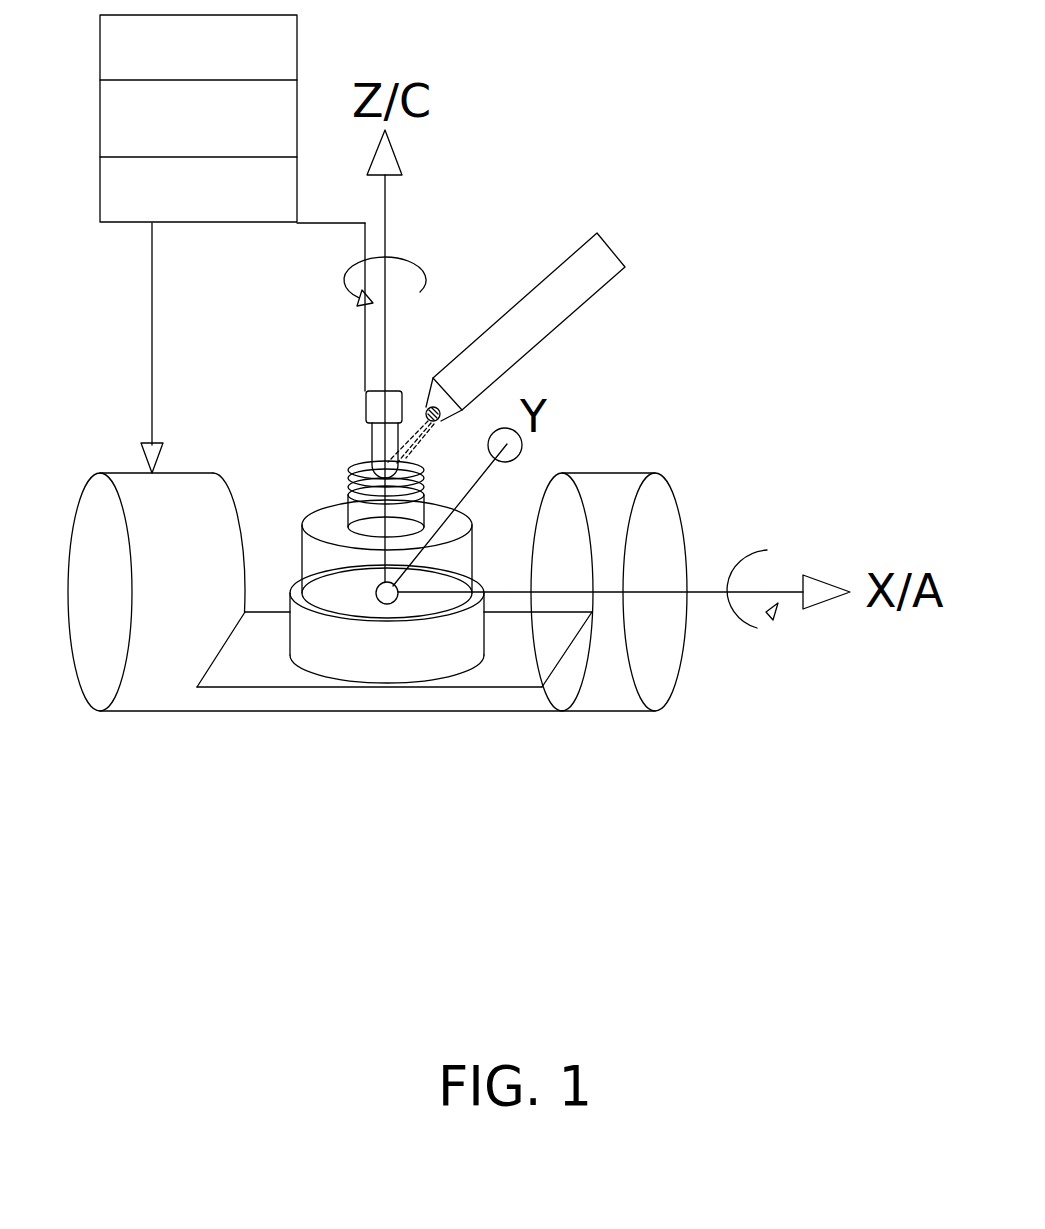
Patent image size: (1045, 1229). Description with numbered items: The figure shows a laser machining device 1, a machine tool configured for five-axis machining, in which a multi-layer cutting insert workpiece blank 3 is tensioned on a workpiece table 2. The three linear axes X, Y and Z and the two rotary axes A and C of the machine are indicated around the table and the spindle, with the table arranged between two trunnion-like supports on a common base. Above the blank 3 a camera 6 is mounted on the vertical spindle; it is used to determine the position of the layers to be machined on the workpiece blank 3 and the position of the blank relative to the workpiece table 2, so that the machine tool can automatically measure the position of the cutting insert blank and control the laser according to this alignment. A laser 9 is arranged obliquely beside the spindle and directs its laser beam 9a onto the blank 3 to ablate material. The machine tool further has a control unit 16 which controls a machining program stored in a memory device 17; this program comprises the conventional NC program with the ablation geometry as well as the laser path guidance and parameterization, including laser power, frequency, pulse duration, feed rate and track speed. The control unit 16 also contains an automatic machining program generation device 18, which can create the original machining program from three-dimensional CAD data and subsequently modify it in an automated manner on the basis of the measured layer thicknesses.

The laser machining device 1 is at (537, 856).
The workpiece table 2 is at (313, 508).
The multi-layer workpiece blank 3 is at (350, 470).
The camera 6 is at (398, 385).
The laser 9 is at (613, 248).
The laser beam 9a is at (403, 463).
The control unit 16 is at (201, 244).
The memory device 17 is at (213, 64).
The machining program generation device 18 is at (213, 202).